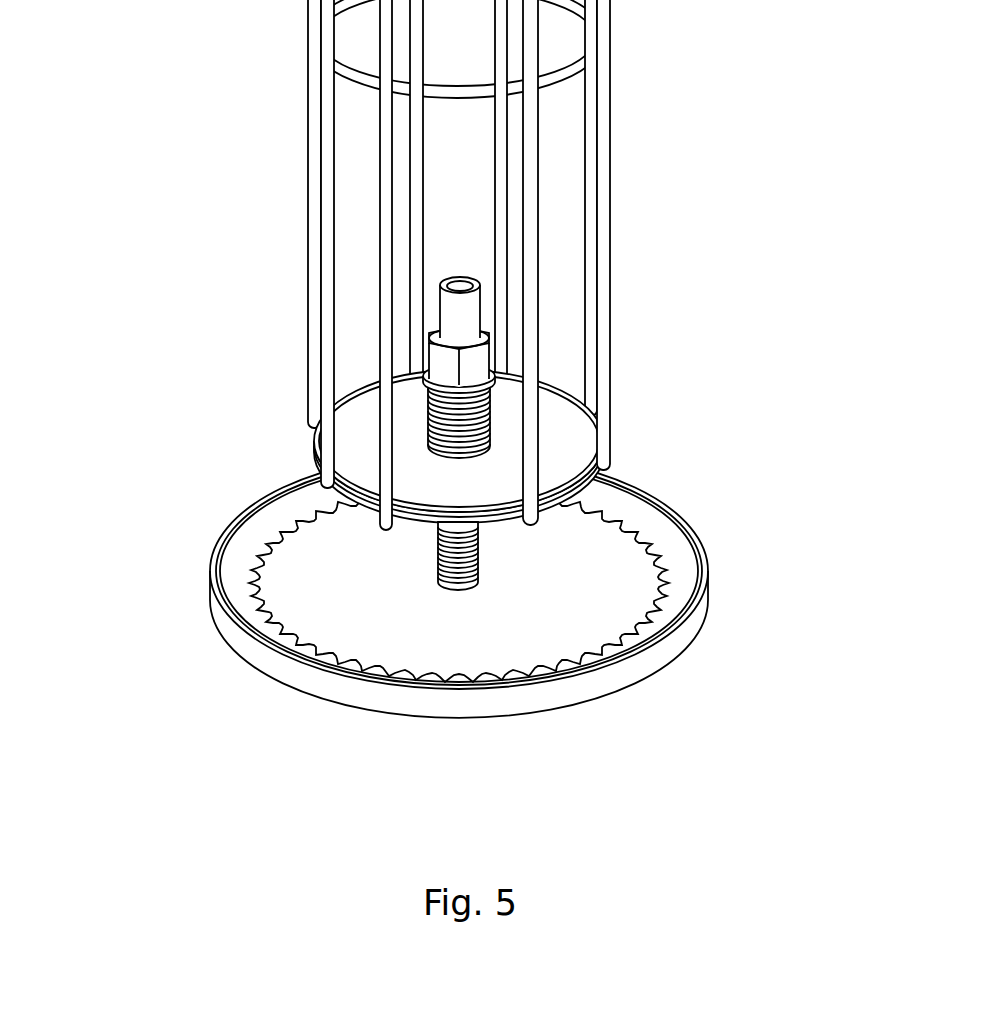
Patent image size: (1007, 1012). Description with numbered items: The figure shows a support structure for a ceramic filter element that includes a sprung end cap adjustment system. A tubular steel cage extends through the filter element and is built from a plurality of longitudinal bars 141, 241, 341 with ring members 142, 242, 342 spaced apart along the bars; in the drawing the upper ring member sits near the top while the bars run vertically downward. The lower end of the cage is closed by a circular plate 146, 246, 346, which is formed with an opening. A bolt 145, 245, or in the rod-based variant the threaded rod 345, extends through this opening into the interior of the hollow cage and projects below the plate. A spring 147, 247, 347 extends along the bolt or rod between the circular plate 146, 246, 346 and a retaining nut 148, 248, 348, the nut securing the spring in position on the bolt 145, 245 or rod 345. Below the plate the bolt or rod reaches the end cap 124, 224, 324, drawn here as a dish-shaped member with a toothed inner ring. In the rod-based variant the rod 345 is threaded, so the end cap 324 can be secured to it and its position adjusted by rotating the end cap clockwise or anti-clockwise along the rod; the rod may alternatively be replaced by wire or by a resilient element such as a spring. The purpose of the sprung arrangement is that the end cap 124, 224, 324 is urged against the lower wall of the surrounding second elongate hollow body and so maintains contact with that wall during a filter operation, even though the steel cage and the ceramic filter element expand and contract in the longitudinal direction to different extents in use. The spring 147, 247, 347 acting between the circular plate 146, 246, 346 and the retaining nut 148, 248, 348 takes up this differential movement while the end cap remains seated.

The ring members 142 is at (593, 49).
The upper ring of cage 242 is at (593, 49).
The upper ring of cage 342 is at (593, 34).
The longitudinal bars 141 is at (578, 359).
The vertical rod of cage 241 is at (578, 359).
The longitudinal bars 341 is at (578, 359).
The bolt 145 is at (291, 303).
The bolt 245 is at (291, 303).
The rod 345 is at (438, 312).
The retaining nut 148 is at (647, 360).
The retaining nut 248 is at (647, 360).
The retaining nut 348 is at (486, 356).
The spring 147 is at (432, 423).
The spring 247 is at (260, 425).
The spring 347 is at (260, 425).
The circular plate 146 is at (612, 446).
The circular plate 246 is at (612, 446).
The circular plate 346 is at (566, 436).
The end cap 124 is at (578, 585).
The end cap 224 is at (578, 585).
The end cap 324 is at (594, 597).